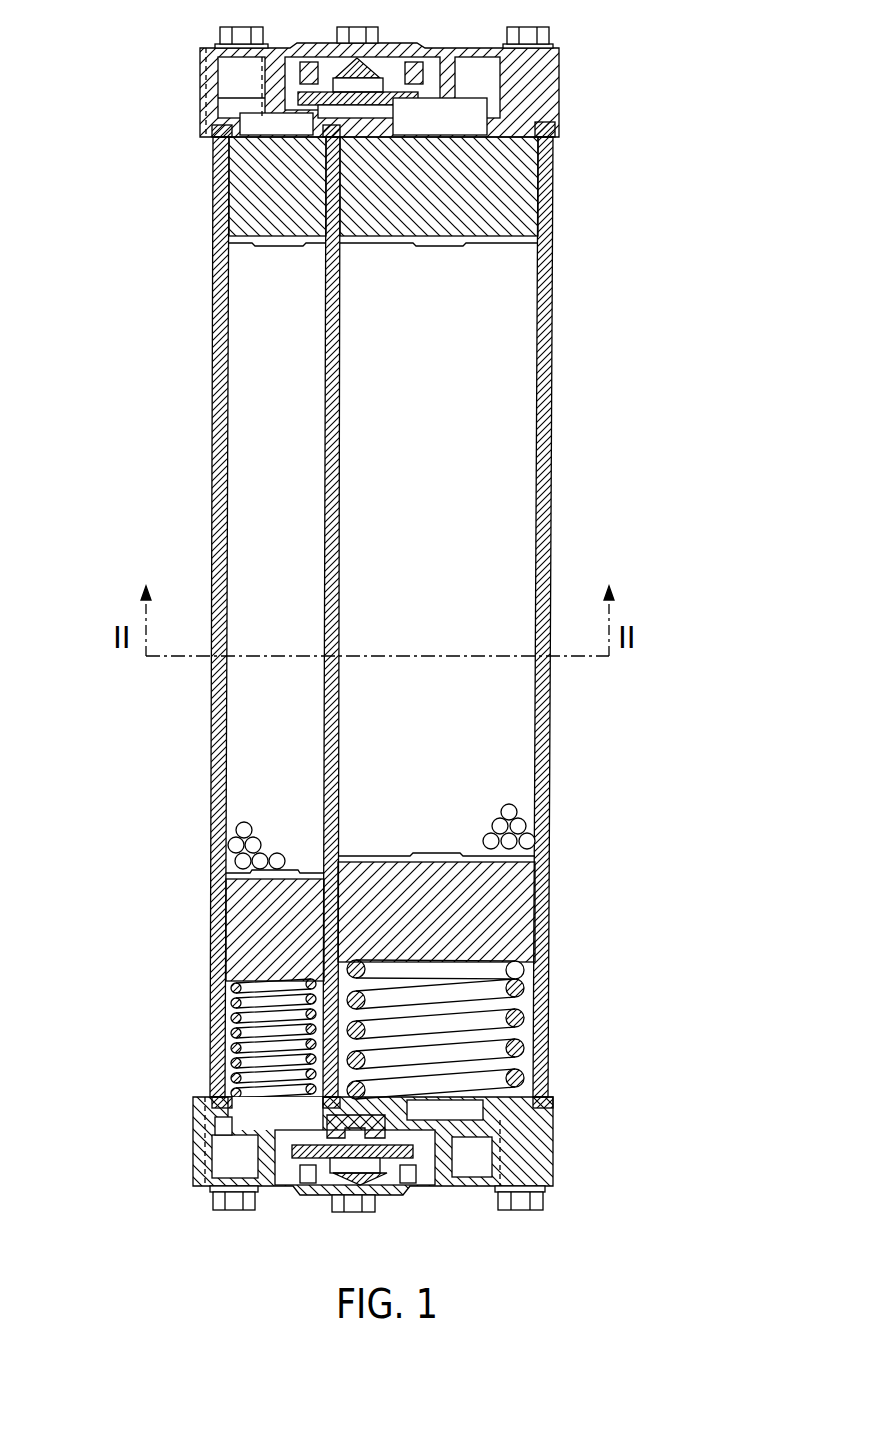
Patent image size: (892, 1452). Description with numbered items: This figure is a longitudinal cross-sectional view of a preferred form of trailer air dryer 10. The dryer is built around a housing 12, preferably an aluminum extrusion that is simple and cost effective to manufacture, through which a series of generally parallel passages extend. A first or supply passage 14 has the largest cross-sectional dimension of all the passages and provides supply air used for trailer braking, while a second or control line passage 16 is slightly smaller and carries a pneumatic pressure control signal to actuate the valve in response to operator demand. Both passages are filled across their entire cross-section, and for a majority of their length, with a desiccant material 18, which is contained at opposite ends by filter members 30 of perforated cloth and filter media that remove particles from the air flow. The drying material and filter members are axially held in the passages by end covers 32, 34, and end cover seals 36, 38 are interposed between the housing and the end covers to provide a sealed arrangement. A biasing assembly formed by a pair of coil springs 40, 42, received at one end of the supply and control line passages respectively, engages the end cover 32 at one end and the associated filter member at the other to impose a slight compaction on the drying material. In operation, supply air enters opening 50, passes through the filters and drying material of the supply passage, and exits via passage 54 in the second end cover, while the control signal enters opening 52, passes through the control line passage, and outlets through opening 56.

The trailer air dryer 10 is at (640, 258).
The housing 12 is at (543, 340).
The supply passage 14 is at (495, 578).
The control line passage 16 is at (240, 512).
The desiccant material 18 is at (236, 845).
The filter members 30 is at (540, 200).
The end cover 32 is at (560, 1152).
The end cover 34 is at (564, 95).
The end cover seal 36 is at (545, 1106).
The end cover seal 38 is at (206, 128).
The spring 40 is at (522, 1012).
The spring 42 is at (237, 1046).
The opening 50 is at (472, 1165).
The opening 52 is at (258, 1152).
The passage 54 is at (466, 62).
The opening 56 is at (228, 78).